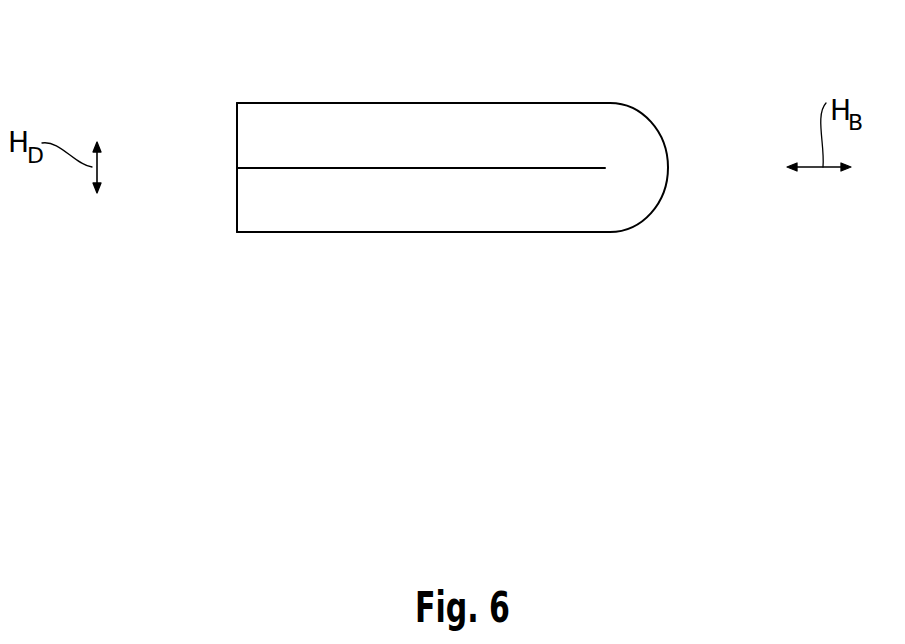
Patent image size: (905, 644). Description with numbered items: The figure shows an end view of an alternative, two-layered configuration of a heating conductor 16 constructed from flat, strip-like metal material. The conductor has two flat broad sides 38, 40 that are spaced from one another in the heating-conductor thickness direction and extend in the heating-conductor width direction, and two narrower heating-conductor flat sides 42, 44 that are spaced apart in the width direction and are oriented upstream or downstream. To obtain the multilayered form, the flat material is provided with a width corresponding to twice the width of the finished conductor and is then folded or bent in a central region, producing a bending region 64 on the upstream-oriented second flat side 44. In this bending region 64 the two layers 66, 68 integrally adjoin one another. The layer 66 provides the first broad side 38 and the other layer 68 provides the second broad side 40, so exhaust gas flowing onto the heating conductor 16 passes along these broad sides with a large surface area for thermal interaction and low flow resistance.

The heating conductor 16 is at (640, 80).
The first heating-conductor flat side 38 is at (336, 103).
The second heating-conductor flat side 40 is at (336, 232).
The first heating-conductor flat side 42 is at (237, 198).
The second heating-conductor flat side 44 is at (668, 167).
The bending region 64 is at (640, 196).
The first layer 66 is at (425, 115).
The second layer 68 is at (428, 222).